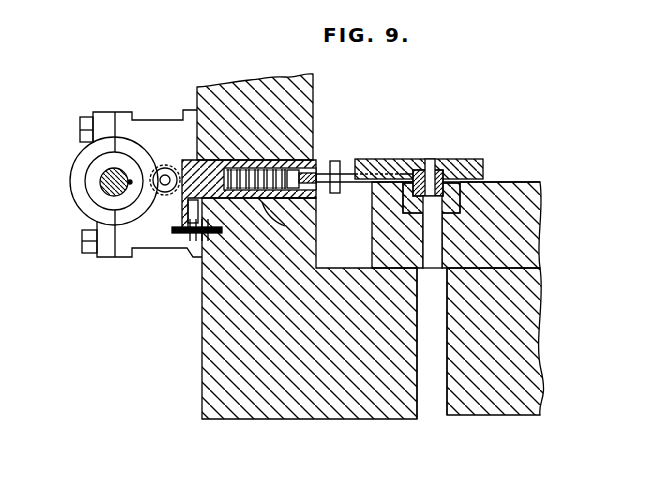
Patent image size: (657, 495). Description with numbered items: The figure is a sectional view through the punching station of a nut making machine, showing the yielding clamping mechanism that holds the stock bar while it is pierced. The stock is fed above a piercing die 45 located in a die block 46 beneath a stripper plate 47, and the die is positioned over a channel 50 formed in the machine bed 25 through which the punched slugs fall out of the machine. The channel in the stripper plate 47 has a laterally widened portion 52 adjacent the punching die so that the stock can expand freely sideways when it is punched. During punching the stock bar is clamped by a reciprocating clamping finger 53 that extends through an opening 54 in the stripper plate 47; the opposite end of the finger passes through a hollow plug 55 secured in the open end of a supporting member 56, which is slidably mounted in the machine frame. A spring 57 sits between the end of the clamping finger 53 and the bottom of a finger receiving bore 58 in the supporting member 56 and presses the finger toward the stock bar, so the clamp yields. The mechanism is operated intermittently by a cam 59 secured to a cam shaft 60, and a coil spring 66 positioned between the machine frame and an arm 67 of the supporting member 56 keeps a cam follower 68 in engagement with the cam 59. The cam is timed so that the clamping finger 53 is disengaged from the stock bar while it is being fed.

The main body block 25 is at (215, 350).
The piercing die 45 is at (483, 166).
The die block 46 is at (458, 206).
The stripper plate 47 is at (433, 158).
The channel 50 is at (420, 400).
The laterally widened portion 52 is at (447, 165).
The clamping finger 53 is at (298, 158).
The opening 54 is at (390, 162).
The hollow plug 55 is at (343, 168).
The supporting member 56 is at (265, 200).
The spring 57 is at (265, 170).
The finger receiving bore 58 is at (285, 226).
The cam 59 is at (103, 203).
The cam shaft 60 is at (102, 173).
The coil spring 66 is at (197, 245).
The arm 67 is at (182, 200).
The cam follower 68 is at (165, 165).